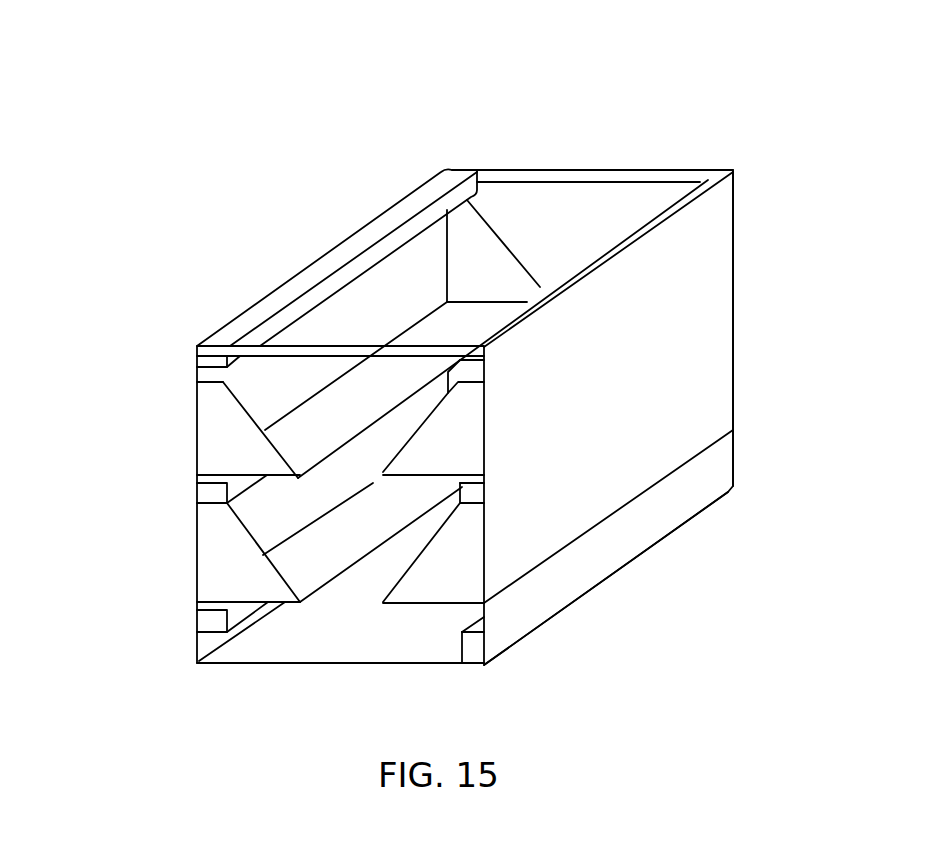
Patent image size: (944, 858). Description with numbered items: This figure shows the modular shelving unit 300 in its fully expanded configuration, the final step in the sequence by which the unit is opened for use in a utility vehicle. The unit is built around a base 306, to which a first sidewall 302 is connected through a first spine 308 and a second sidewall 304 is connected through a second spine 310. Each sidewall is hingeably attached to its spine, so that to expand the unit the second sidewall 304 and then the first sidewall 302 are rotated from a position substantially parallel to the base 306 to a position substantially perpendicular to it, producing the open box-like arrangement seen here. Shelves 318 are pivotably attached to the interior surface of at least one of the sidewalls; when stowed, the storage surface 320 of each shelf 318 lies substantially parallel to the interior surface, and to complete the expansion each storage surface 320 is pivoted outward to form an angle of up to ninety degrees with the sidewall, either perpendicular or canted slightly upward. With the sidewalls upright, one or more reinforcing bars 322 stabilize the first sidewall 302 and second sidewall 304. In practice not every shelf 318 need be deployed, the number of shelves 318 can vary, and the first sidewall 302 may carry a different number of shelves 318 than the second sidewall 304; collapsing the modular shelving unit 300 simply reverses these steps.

The modular shelving unit 300 is at (277, 158).
The first sidewall 302 is at (197, 379).
The second sidewall 304 is at (682, 310).
The base 306 is at (315, 662).
The first spine 308 is at (197, 642).
The second spine 310 is at (632, 537).
The shelves 318 is at (227, 432).
The storage surface 320 is at (367, 520).
The reinforcing bars 322 is at (600, 173).